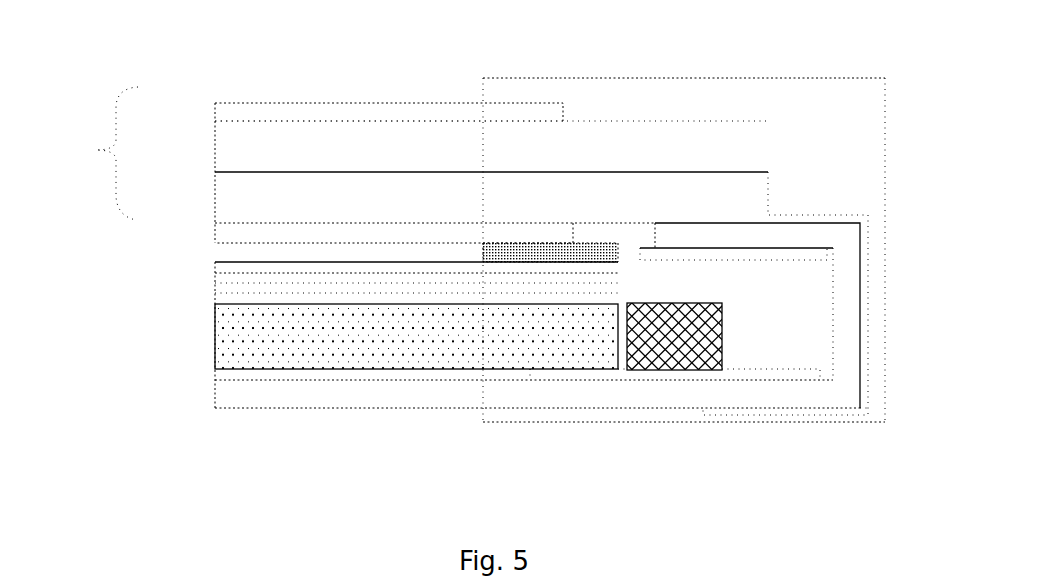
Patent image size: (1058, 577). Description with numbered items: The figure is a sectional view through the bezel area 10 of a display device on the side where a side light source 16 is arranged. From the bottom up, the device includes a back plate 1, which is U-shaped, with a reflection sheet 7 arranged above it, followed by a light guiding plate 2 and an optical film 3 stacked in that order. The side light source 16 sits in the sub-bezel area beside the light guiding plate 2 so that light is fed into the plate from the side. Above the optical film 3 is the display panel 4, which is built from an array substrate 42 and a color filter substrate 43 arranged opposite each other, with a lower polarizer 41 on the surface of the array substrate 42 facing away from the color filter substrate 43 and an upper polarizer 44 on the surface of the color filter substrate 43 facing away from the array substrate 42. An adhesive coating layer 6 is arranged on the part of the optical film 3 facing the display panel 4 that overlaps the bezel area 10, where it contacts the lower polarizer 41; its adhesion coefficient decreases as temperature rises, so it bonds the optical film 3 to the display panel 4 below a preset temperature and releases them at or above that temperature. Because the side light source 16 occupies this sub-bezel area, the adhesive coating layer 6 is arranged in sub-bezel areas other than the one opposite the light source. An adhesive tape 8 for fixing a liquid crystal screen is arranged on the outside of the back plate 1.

The back plate 1 is at (230, 398).
The light guiding plate 2 is at (230, 343).
The optical film 3 is at (222, 300).
The display panel 4 is at (471, 248).
The lower polarizer 41 is at (230, 233).
The array substrate 42 is at (230, 207).
The color filter substrate 43 is at (230, 152).
The upper polarizer 44 is at (230, 110).
The adhesive coating layer 6 is at (483, 254).
The reflection sheet 7 is at (230, 375).
The adhesive tape 8 is at (863, 402).
The bezel area 10 is at (740, 78).
The side light source 16 is at (673, 367).